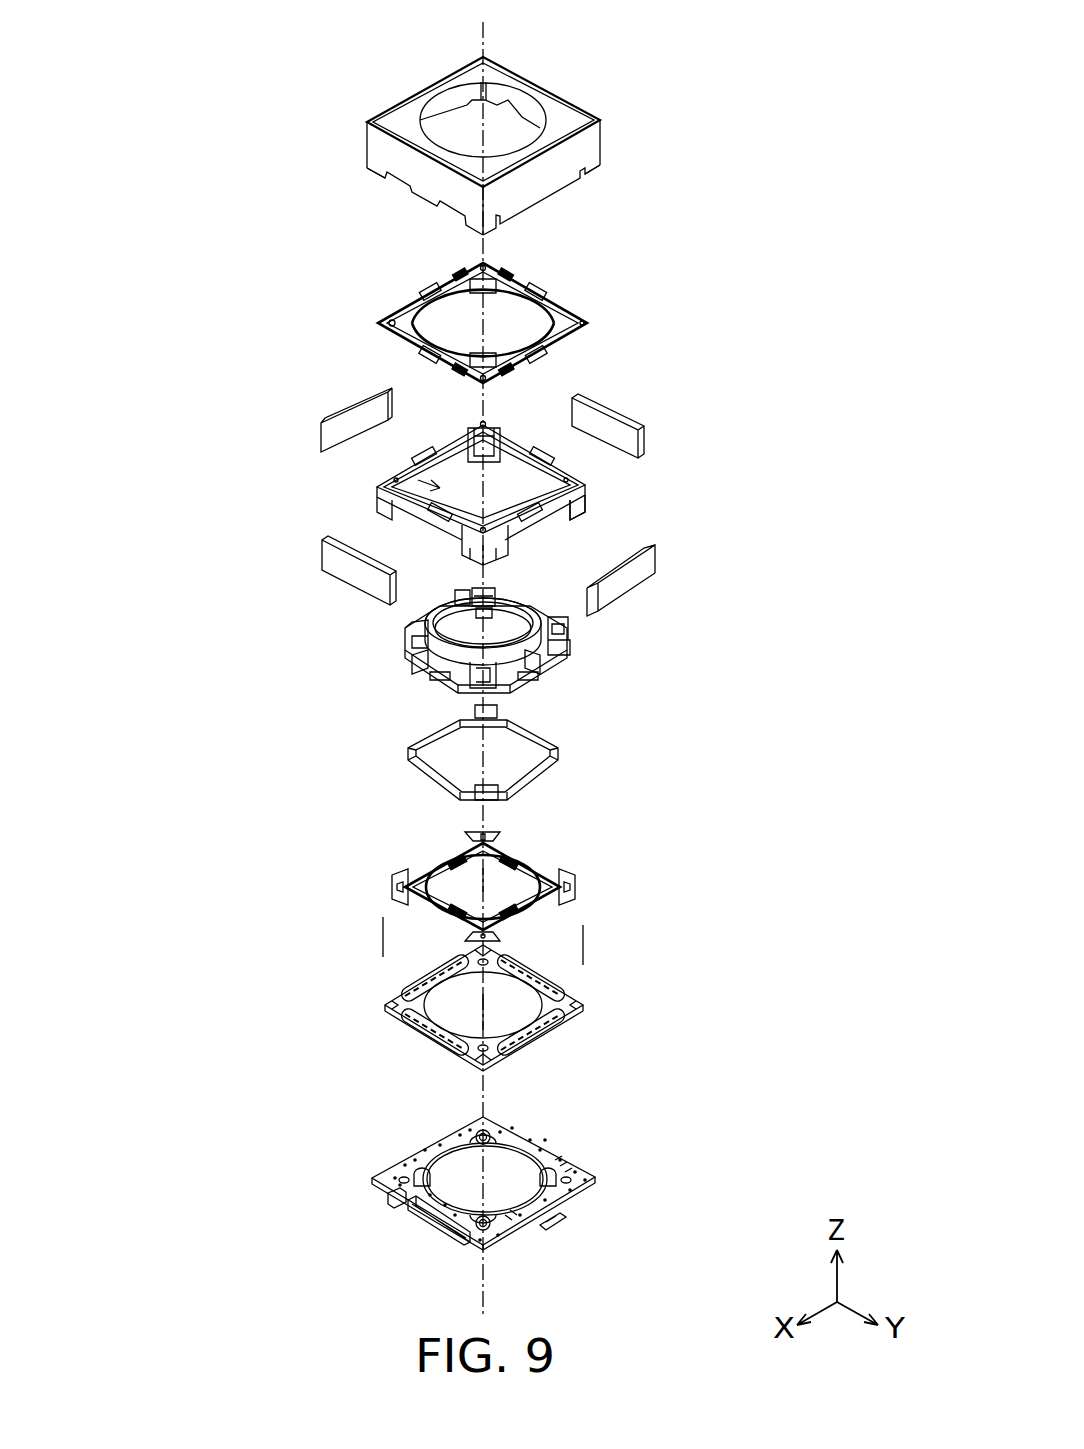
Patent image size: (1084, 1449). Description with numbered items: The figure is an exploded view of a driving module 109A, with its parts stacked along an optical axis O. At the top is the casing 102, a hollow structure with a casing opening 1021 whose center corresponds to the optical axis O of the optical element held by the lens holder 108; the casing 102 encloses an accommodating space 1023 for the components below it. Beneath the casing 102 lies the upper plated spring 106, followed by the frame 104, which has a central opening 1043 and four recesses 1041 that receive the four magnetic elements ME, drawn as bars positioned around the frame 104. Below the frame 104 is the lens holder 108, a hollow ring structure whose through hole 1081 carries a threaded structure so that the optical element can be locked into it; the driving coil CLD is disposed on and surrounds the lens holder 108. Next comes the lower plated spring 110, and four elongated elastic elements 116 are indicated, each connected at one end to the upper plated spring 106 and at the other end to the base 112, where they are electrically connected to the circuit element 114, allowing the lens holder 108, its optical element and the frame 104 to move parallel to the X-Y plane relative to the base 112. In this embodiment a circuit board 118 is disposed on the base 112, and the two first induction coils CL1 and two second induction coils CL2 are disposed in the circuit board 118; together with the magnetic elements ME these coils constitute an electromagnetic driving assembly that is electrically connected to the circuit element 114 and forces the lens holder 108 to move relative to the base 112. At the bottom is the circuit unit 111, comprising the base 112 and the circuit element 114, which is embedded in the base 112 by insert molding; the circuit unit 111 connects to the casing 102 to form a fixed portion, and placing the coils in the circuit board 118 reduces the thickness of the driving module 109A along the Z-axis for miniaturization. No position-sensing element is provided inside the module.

The driving module 109A is at (184, 66).
The optical axis O is at (483, 657).
The casing 102 is at (385, 115).
The casing opening 1021 is at (515, 94).
The accommodating space 1023 is at (567, 208).
The upper plated spring 106 is at (589, 323).
The frame 104 is at (492, 422).
The central opening 1043 is at (416, 480).
The recesses 1041 is at (563, 525).
The magnetic elements ME is at (347, 412).
The lens holder 108 is at (549, 676).
The through hole 1081 is at (505, 600).
The driving coil CLD is at (548, 779).
The lower plated spring 110 is at (575, 880).
The elastic elements 116 is at (487, 888).
The circuit board 118 is at (475, 1001).
The first induction coils CL1 is at (408, 992).
The second induction coils CL2 is at (418, 1040).
The circuit unit 111 is at (555, 1208).
The base 112 is at (578, 1198).
The circuit element 114 is at (545, 1231).